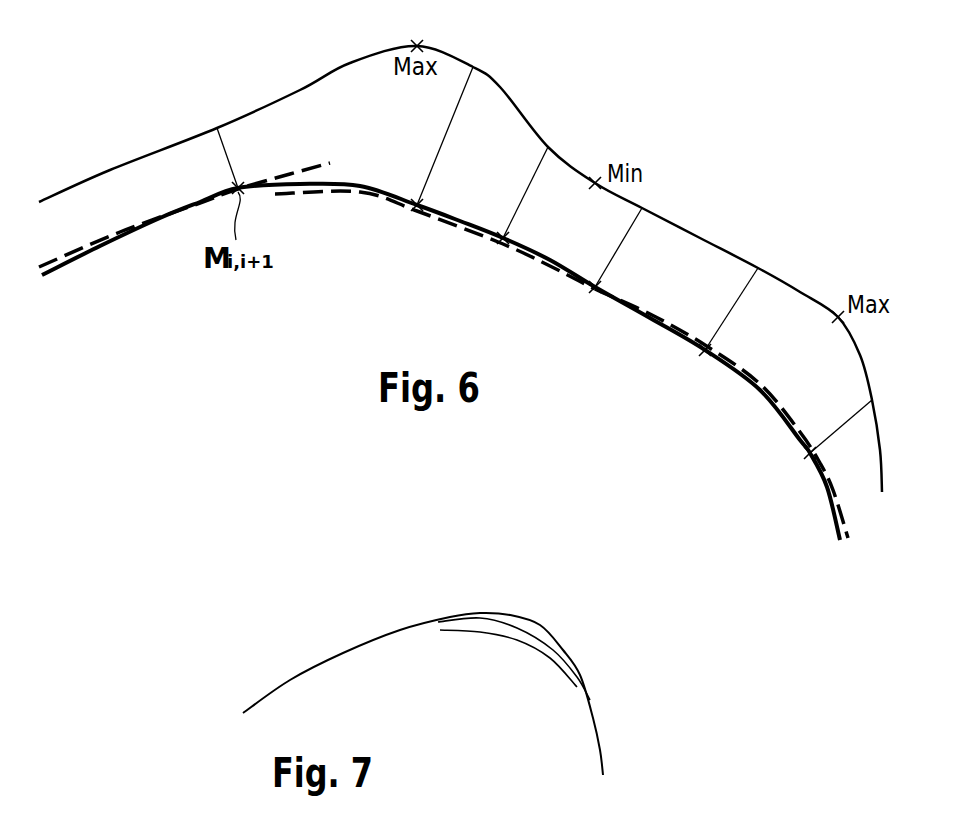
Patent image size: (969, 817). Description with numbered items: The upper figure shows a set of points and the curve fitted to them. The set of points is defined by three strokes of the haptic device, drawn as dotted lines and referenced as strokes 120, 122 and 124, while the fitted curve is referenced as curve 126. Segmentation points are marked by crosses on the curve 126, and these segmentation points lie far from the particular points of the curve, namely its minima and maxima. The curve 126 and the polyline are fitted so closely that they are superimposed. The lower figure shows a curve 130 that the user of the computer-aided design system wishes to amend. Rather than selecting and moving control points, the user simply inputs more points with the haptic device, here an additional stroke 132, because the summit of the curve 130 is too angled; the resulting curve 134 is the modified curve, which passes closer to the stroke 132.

In FIG. 6, the stroke 120 is at (178, 201).
In FIG. 6, the stroke 122 is at (380, 200).
In FIG. 6, the stroke 124 is at (755, 383).
In FIG. 6, the curve 126 is at (620, 297).
In FIG. 7, the curve 130 is at (343, 653).
In FIG. 7, the resulting curve 134 is at (515, 630).
In FIG. 7, the additional stroke 132 is at (547, 660).